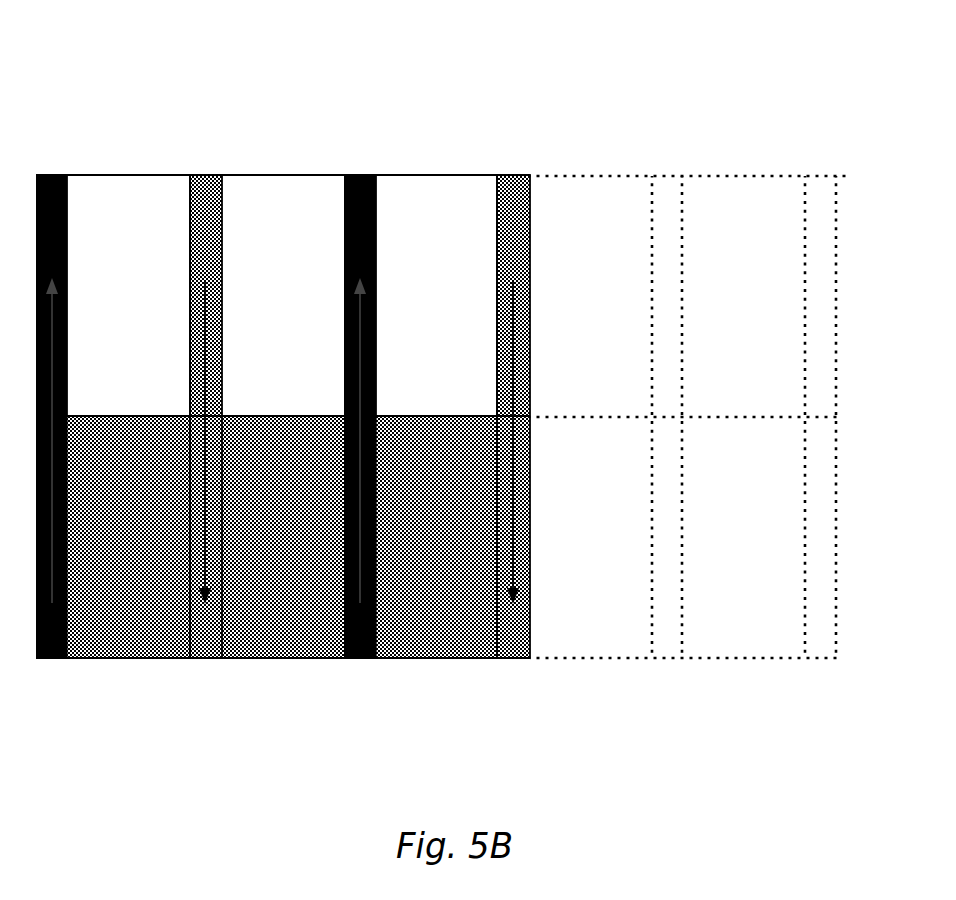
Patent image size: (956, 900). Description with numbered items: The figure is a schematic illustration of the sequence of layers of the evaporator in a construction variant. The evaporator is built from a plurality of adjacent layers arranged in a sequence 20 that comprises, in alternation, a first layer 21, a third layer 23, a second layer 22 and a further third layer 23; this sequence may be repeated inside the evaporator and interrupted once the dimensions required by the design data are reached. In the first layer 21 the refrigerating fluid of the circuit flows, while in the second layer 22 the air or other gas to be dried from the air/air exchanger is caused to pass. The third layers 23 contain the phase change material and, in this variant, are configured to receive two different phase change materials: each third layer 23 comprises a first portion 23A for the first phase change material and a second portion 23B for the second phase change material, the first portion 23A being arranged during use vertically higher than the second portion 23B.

The sequence 20 is at (318, 684).
The first layer 21 is at (47, 174).
The second layer 22 is at (205, 174).
The third layer 23 is at (143, 137).
The first portion 23A is at (130, 307).
The second portion 23B is at (100, 575).